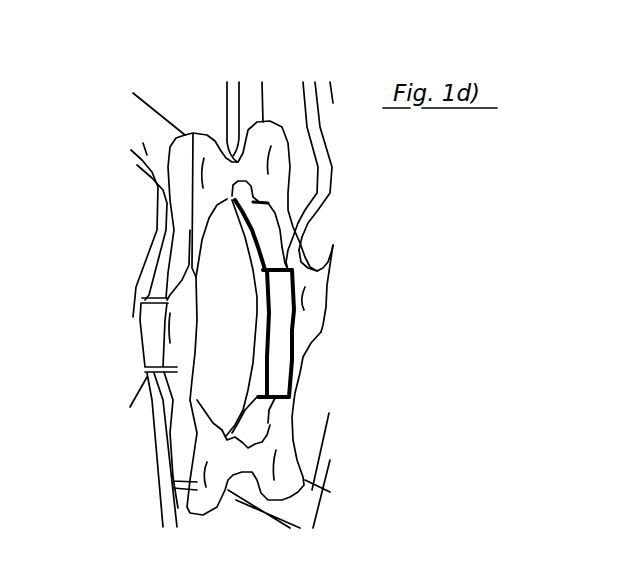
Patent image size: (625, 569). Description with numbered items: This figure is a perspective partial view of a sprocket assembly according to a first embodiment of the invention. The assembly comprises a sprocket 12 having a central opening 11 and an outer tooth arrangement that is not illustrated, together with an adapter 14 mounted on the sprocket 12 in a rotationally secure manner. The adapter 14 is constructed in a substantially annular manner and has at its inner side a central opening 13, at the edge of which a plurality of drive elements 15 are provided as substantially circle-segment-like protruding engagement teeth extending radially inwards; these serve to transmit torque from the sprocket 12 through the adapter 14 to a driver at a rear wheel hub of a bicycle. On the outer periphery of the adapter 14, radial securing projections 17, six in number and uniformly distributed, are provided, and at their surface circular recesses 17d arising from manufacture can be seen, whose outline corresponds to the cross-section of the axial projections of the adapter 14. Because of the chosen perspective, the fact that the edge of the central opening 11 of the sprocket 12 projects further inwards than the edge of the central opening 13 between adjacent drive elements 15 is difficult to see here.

The central opening 11 is at (236, 274).
The sprocket 12 is at (143, 145).
The central opening 13 is at (238, 357).
The adapter 14 is at (350, 313).
The drive elements 15 is at (275, 258).
The radial securing projections 17 is at (316, 357).
The circular recesses 17d is at (307, 300).